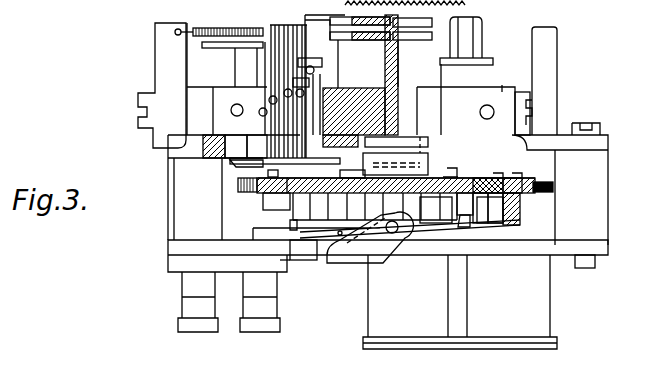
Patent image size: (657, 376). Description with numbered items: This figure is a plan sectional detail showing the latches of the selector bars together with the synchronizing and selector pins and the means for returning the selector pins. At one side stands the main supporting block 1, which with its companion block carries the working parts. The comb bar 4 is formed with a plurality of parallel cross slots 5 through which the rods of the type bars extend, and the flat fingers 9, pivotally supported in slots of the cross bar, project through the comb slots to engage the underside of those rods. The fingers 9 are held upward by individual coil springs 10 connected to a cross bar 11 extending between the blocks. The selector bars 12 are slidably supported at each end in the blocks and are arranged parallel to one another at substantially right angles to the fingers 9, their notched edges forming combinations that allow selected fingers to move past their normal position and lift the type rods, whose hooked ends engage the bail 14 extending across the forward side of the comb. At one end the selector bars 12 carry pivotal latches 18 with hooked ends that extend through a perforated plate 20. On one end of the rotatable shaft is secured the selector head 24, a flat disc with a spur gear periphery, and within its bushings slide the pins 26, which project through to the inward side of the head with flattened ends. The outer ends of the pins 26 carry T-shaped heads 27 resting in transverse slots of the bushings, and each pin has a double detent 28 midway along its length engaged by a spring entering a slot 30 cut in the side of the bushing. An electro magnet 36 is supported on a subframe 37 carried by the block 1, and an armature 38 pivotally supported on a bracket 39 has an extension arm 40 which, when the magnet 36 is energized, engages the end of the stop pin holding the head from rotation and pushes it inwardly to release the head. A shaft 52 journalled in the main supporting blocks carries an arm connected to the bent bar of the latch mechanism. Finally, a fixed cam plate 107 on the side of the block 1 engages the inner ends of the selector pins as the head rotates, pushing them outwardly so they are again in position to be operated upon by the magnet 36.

The block 1 is at (507, 48).
The comb bar 4 is at (349, 131).
The cross slots 5 is at (410, 38).
The flat fingers 9 is at (382, 33).
The coil springs 10 is at (202, 28).
The cross bar 11 is at (160, 70).
The selector bars 12 is at (300, 23).
The bail 14 is at (475, 38).
The pivotal latches 18 is at (313, 82).
The perforated plate 20 is at (257, 163).
The selector head 24 is at (555, 188).
The pins 26 is at (238, 180).
The T-shaped heads 27 is at (468, 222).
The double detent 28 is at (260, 193).
The slot 30 is at (502, 182).
The electro magnet 36 is at (482, 328).
The subframe 37 is at (568, 252).
The armature 38 is at (500, 228).
The bracket 39 is at (353, 252).
The extension arm 40 is at (293, 260).
The shaft 52 is at (553, 88).
The fixed cam plate 107 is at (398, 163).